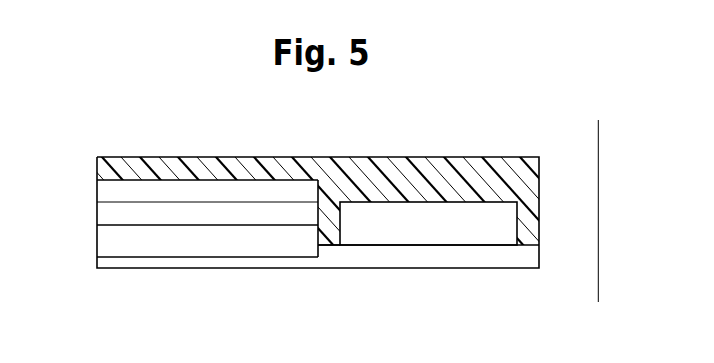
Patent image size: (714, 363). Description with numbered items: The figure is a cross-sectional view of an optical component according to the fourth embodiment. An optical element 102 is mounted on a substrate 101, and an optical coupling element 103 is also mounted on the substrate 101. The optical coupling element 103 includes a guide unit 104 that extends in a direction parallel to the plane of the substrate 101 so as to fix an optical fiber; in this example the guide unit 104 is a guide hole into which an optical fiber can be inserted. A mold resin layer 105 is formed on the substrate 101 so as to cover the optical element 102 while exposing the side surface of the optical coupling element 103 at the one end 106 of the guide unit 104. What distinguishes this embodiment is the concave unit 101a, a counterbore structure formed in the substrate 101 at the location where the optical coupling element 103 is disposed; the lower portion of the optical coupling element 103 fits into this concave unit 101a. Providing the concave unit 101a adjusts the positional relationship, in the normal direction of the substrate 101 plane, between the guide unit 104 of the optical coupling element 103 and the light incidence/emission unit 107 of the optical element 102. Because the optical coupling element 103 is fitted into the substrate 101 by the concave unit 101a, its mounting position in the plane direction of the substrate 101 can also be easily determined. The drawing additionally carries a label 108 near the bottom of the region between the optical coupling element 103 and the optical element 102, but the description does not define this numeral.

The substrate 101 is at (539, 257).
The concave unit 101a is at (150, 257).
The optical element 102 is at (428, 210).
The optical coupling element 103 is at (210, 183).
The guide unit 104 is at (282, 210).
The mold resin layer 105 is at (539, 180).
The one end of the guide unit 106 is at (95, 210).
The light incidence/emission unit 107 is at (335, 213).
The bottom of gap 108 is at (332, 247).